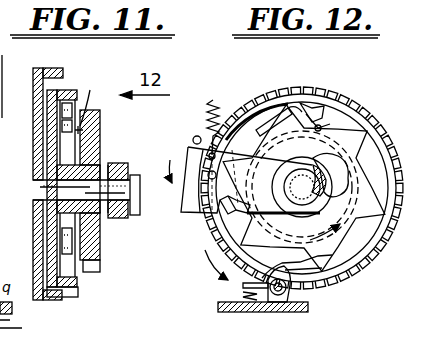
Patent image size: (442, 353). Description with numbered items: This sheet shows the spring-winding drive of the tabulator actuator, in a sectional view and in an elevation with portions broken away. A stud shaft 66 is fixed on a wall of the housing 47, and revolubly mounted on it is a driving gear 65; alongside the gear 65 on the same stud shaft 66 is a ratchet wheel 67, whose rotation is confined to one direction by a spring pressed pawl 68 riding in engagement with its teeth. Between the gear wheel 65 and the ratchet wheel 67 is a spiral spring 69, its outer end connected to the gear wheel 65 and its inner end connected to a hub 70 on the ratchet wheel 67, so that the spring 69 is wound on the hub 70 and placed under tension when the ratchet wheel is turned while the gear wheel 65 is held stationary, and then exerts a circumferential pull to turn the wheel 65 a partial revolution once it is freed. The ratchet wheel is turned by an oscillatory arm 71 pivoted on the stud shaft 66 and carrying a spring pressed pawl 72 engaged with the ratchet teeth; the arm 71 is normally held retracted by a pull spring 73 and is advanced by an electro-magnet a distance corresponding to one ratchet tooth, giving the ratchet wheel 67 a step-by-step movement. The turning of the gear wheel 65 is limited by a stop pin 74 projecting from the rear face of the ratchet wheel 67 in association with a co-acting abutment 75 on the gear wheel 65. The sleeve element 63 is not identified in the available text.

In FIG. 11, the housing 47 is at (50, 68).
In FIG. 11, the sleeve 63 is at (65, 90).
In FIG. 11, the stop pin 74 is at (95, 101).
In FIG. 12, the stop pin 74 is at (322, 122).
In FIG. 11, the spiral spring 69 is at (68, 245).
In FIG. 12, the spiral spring 69 is at (277, 110).
In FIG. 11, the stud shaft 66 is at (60, 192).
In FIG. 11, the hub 70 is at (62, 172).
In FIG. 11, the ratchet wheel 67 is at (100, 263).
In FIG. 12, the ratchet wheel 67 is at (340, 256).
In FIG. 11, the oscillatory arm 71 is at (124, 166).
In FIG. 12, the oscillatory arm 71 is at (183, 210).
In FIG. 12, the driving gear 65 is at (368, 118).
In FIG. 12, the abutment 75 is at (337, 114).
In FIG. 12, the pull spring 73 is at (213, 100).
In FIG. 12, the spring pressed pawl 72 is at (228, 212).
In FIG. 12, the spring pressed pawl 68 is at (292, 264).